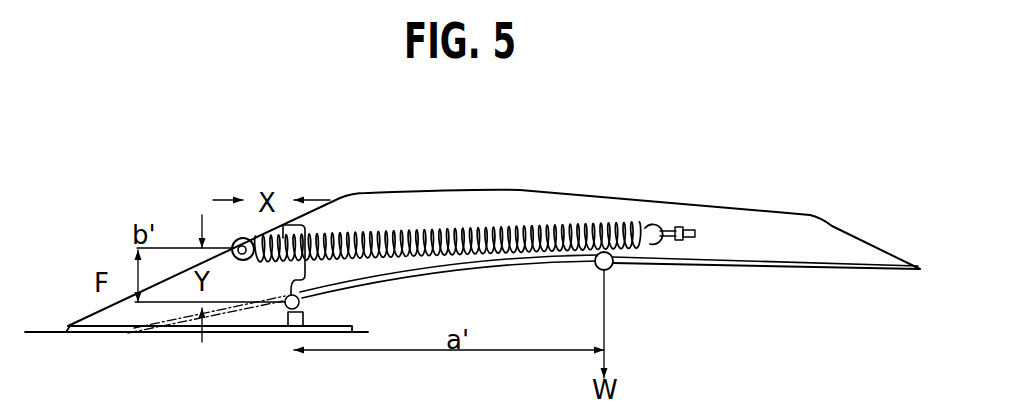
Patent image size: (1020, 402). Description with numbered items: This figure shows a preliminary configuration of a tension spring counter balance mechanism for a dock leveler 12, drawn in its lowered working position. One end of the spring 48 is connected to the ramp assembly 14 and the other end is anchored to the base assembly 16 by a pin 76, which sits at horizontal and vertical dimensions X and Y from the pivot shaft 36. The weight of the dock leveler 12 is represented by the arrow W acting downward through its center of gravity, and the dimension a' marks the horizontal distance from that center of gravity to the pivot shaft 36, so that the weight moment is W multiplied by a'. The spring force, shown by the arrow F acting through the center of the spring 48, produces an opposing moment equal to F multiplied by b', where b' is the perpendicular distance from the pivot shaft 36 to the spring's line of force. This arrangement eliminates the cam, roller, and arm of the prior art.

The dock leveler 12 is at (750, 171).
The ramp assembly 14 is at (382, 193).
The base assembly 16 is at (83, 318).
The pivot shaft 36 is at (294, 192).
The spring 48 is at (467, 224).
The pin 76 is at (243, 238).